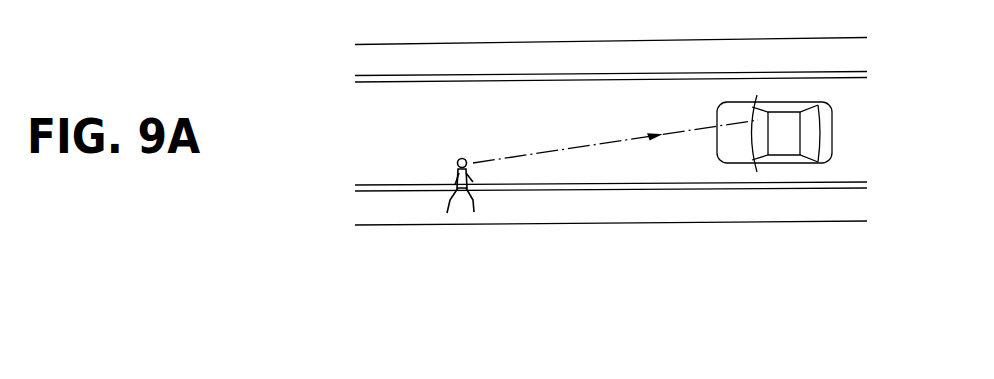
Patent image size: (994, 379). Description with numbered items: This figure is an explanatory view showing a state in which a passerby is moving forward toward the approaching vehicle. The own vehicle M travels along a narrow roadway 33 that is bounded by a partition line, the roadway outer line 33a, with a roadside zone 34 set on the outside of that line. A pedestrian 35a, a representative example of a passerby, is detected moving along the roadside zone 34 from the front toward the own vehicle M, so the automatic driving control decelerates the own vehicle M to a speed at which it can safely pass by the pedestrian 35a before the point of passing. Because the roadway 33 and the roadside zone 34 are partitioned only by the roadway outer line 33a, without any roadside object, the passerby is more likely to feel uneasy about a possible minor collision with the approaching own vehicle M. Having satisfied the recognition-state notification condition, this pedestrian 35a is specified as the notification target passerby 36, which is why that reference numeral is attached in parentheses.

The roadway 33 is at (456, 122).
The roadway outer line 33a is at (851, 182).
The roadside zone 34 is at (781, 212).
The pedestrian 35a is at (467, 212).
The notification target passerby 36 is at (469, 302).
The own vehicle M is at (832, 125).